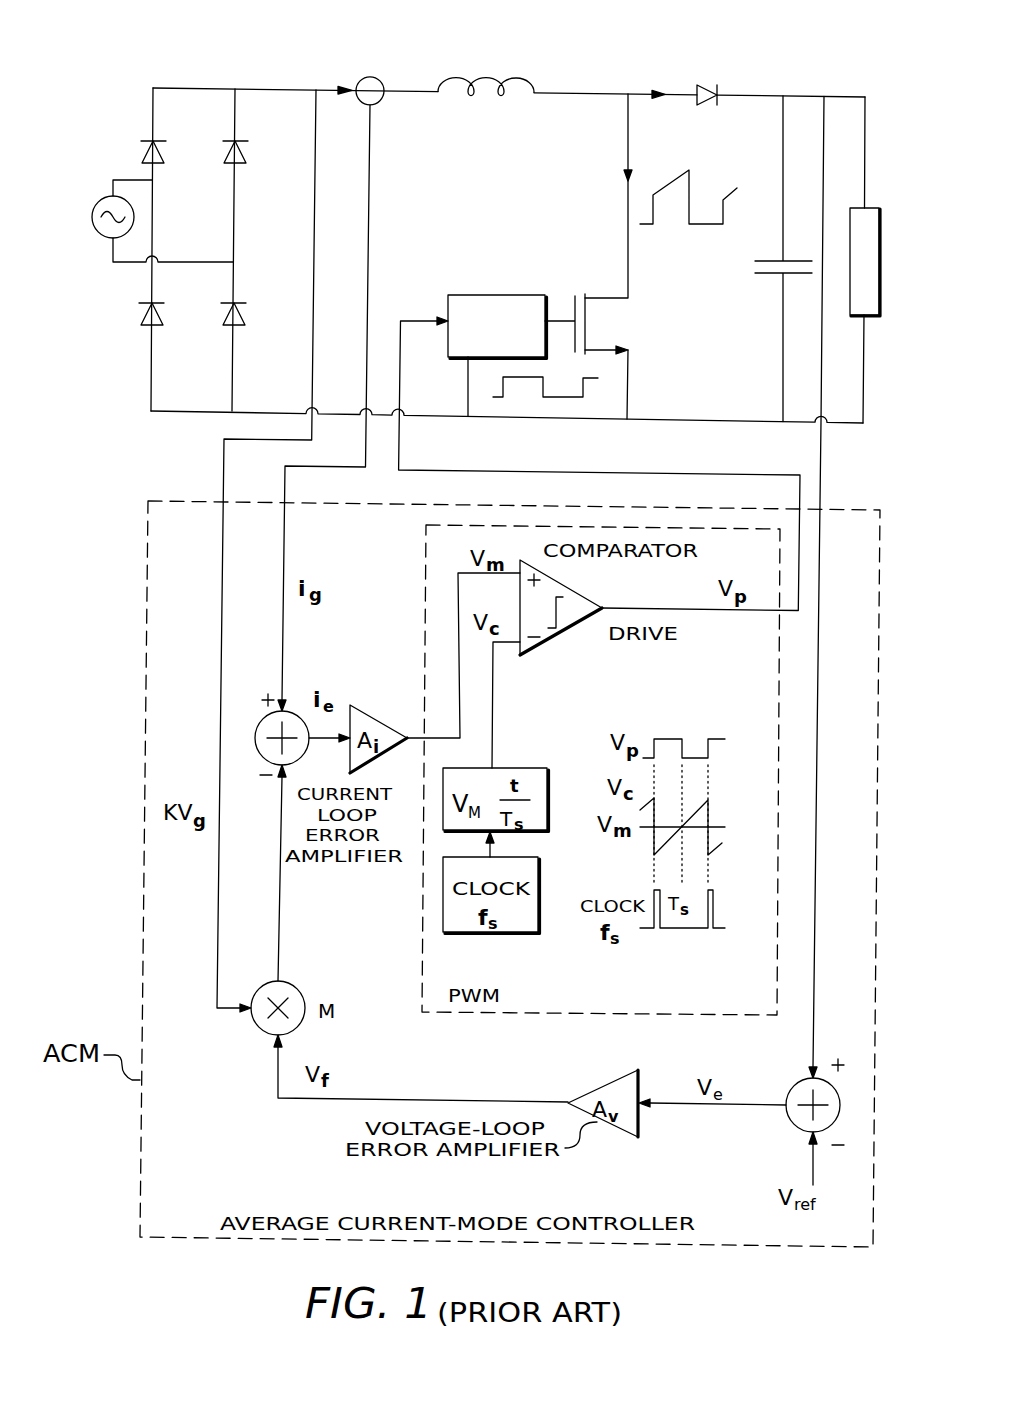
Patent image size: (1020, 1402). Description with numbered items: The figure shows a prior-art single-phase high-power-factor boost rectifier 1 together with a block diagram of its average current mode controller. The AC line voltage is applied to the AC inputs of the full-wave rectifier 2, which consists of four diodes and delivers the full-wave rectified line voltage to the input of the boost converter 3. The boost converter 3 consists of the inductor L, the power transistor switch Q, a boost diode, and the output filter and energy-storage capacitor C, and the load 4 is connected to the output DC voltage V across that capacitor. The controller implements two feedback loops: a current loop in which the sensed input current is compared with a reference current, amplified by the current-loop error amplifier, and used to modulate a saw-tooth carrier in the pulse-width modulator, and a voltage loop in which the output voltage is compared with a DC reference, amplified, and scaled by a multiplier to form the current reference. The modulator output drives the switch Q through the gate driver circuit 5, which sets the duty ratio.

The boost rectifier 1 is at (131, 49).
The full-wave rectifier 2 is at (121, 123).
The boost converter 3 is at (456, 64).
The load 4 is at (875, 258).
The gate driver circuit 5 is at (500, 294).